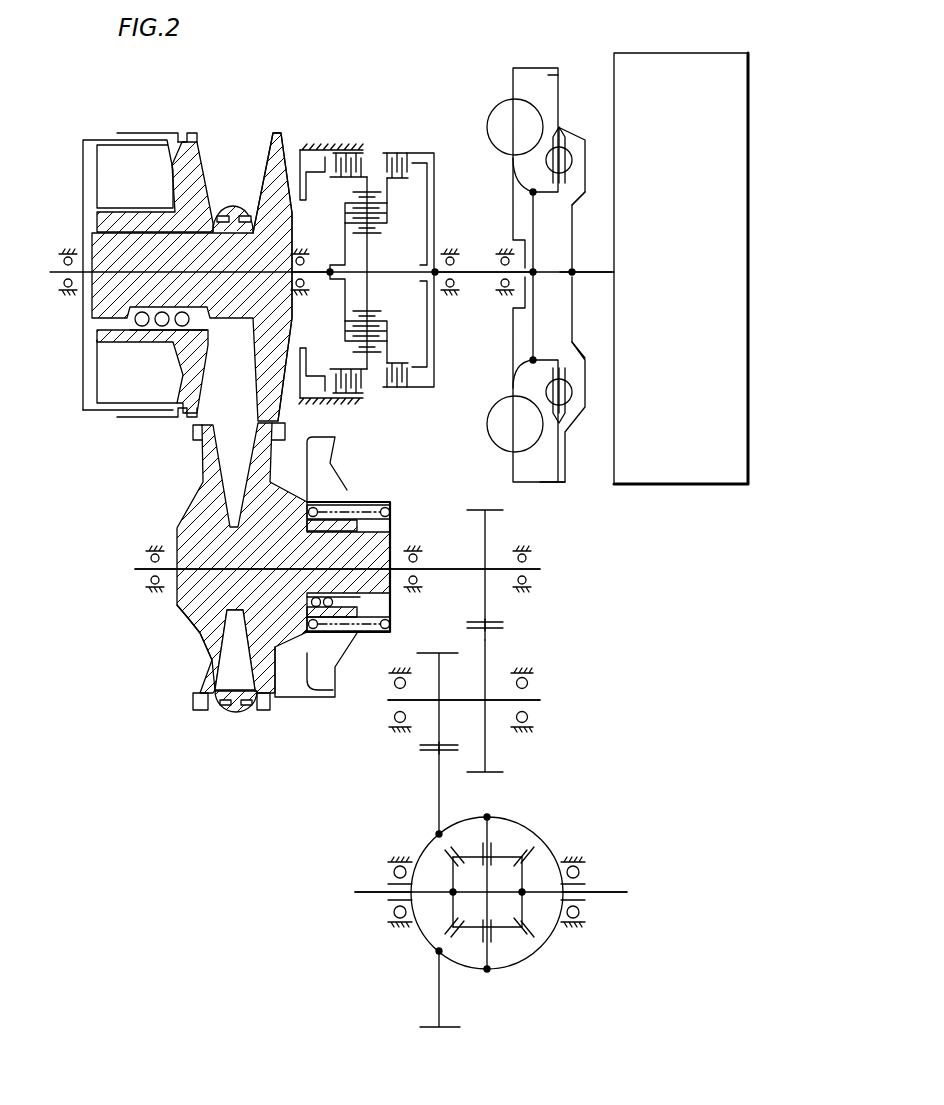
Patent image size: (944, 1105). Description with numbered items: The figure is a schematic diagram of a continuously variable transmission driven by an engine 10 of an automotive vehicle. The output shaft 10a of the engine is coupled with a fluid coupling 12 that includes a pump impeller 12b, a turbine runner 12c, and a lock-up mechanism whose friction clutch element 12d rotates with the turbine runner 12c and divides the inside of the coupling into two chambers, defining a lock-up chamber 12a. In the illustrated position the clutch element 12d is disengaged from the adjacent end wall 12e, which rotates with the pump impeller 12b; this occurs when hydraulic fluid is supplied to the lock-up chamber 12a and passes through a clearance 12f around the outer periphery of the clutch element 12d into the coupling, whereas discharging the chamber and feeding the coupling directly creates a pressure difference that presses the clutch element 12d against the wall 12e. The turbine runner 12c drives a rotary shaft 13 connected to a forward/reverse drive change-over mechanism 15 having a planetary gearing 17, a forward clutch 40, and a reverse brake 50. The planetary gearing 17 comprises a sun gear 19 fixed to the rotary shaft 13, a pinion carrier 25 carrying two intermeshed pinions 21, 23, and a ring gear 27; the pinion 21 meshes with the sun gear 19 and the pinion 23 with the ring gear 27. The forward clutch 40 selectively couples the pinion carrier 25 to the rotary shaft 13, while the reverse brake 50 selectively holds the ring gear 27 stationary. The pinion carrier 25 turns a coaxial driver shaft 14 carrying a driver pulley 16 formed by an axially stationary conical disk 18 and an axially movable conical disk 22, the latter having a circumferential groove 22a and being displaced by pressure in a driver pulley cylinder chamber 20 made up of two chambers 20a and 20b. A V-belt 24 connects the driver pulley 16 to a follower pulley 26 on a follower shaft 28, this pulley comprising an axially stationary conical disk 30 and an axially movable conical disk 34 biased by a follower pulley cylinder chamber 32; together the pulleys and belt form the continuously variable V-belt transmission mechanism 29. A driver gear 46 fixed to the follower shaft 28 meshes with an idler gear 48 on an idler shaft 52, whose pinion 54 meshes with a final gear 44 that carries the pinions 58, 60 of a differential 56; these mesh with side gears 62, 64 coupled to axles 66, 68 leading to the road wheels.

The engine 10 is at (684, 53).
The output shaft 10a is at (593, 276).
The fluid coupling 12 is at (544, 60).
The lock-up chamber 12a is at (562, 340).
The pump impeller 12b is at (497, 424).
The turbine runner 12c is at (535, 430).
The friction clutch element 12d is at (565, 113).
The end wall 12e is at (564, 80).
The clearance 12f is at (558, 483).
The rotary shaft 13 is at (480, 278).
The driver shaft 14 is at (317, 280).
The forward/reverse drive change-over mechanism 15 is at (331, 138).
The driver pulley 16 is at (280, 118).
The planetary gearing 17 is at (412, 216).
The axially stationary conical disk 18 is at (288, 134).
The sun gear 19 is at (370, 290).
The driver pulley cylinder chamber 20 is at (117, 152).
The chamber 20a is at (90, 404).
The chamber 20b is at (164, 134).
The pinion 21 is at (376, 319).
The axially movable conical disk 22 is at (192, 136).
The circumferential groove 22a is at (205, 150).
The pinion 23 is at (376, 351).
The V-belt 24 is at (197, 415).
The pinion carrier 25 is at (347, 311).
The follower pulley 26 is at (222, 724).
The ring gear 27 is at (372, 360).
The follower shaft 28 is at (450, 571).
The continuously variable V-belt transmission mechanism 29 is at (185, 500).
The axially stationary conical disk 30 is at (207, 647).
The follower pulley cylinder chamber 32 is at (289, 684).
The axially movable conical disk 34 is at (266, 702).
The forward clutch 40 is at (411, 152).
The final gear 44 is at (456, 1028).
The driver gear 46 is at (481, 508).
The idler gear 48 is at (486, 738).
The reverse brake 50 is at (364, 155).
The idler shaft 52 is at (498, 700).
The pinion 54 is at (437, 726).
The differential 56 is at (562, 829).
The pinion 58 is at (508, 928).
The pinion 60 is at (470, 854).
The side gear 62 is at (453, 904).
The side gear 64 is at (526, 872).
The axle 66 is at (365, 894).
The axle 68 is at (622, 896).